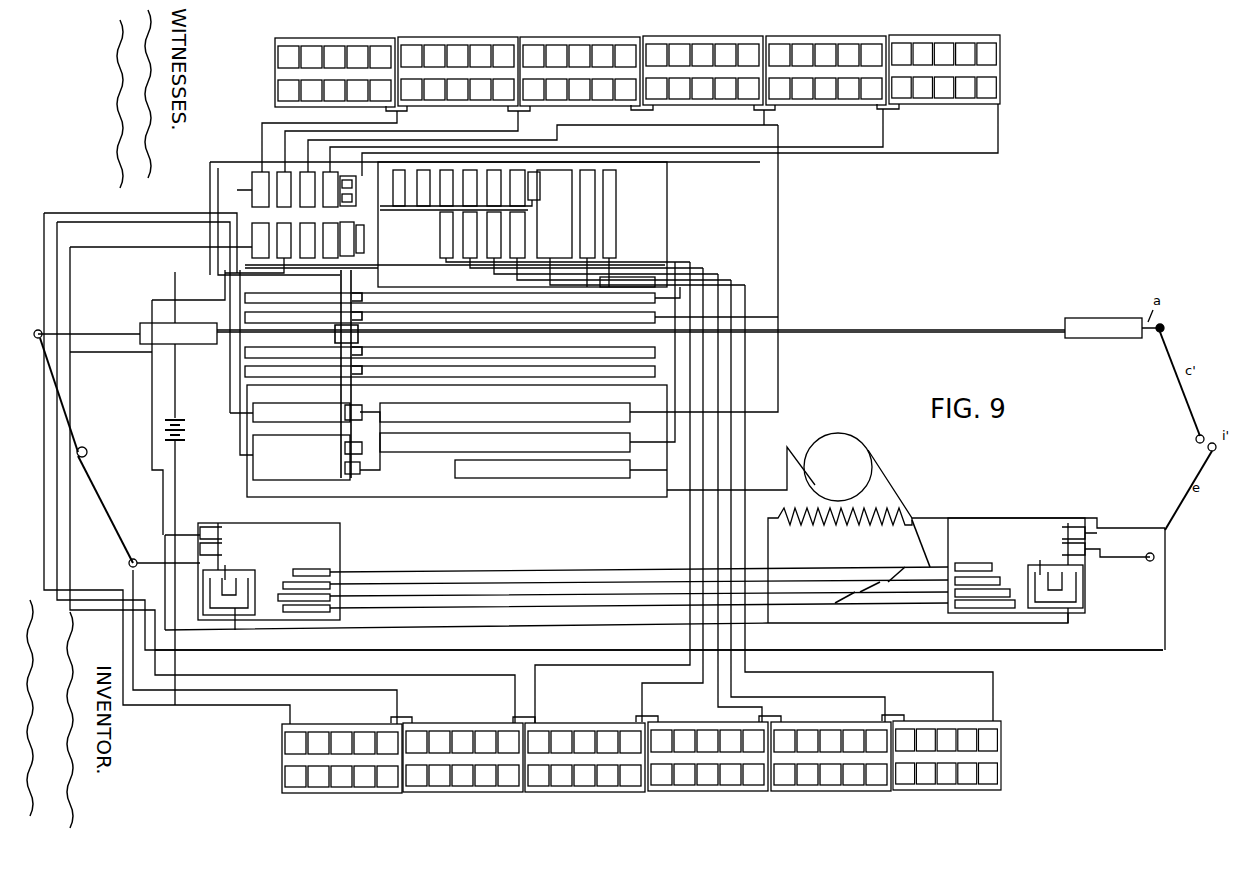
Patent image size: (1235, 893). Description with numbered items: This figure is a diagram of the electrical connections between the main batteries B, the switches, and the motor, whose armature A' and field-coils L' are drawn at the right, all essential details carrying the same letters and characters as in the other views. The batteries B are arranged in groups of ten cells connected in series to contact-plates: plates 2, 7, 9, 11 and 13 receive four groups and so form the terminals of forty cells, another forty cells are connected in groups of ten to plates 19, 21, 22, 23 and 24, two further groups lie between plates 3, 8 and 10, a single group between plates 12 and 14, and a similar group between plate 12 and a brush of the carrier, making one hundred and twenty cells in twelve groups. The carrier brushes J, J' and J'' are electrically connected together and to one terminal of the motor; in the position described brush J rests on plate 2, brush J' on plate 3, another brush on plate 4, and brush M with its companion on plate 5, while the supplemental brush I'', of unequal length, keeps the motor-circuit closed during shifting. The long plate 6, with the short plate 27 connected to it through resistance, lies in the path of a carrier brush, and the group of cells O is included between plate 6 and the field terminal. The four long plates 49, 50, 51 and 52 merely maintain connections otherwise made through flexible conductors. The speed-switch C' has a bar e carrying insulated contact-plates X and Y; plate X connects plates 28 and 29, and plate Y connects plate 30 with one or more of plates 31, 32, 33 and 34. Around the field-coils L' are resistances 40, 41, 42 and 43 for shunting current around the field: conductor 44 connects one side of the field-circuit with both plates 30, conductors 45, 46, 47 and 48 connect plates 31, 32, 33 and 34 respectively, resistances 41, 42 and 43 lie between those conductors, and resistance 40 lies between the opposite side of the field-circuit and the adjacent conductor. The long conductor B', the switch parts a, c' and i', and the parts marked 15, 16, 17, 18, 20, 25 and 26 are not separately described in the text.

The storage battery B is at (638, 412).
The main conductor B' is at (641, 318).
The armature / motor A' is at (838, 467).
The field-coils L' is at (840, 565).
The controller C' is at (641, 569).
The contact-plate X is at (648, 546).
The contact-plate Y is at (651, 587).
The group of cells O is at (186, 430).
The resistance box a is at (130, 331).
The lever arm c' is at (66, 391).
The pivot i' is at (89, 455).
The bar e is at (100, 499).
The brush M is at (362, 441).
The brush J is at (351, 200).
The brush J' is at (360, 239).
The brush J'' is at (545, 186).
The supplemental brush I'' is at (354, 184).
The contact-plate 2 is at (260, 189).
The contact-plate 3 is at (260, 240).
The plate 4 is at (290, 362).
The plate 5 is at (301, 457).
The plate 6 is at (455, 269).
The contact-plate 7 is at (284, 189).
The contact-plate 8 is at (284, 240).
The contact-plate 9 is at (307, 189).
The contact-plate 10 is at (307, 240).
The contact-plate 11 is at (328, 208).
The contact-plate 12 is at (330, 240).
The contact-plate 13 is at (361, 191).
The contact-plate 14 is at (364, 228).
The relay 15 is at (399, 188).
The contact bar 16 is at (579, 273).
The contact bar 17 is at (527, 357).
The relay 18 is at (423, 188).
The contact-plate 19 is at (446, 214).
The contact bar 20 is at (561, 469).
The contact-plate 21 is at (470, 214).
The contact-plate 22 is at (494, 214).
The contact-plate 23 is at (517, 214).
The contact-plate 24 is at (554, 214).
The relay 25 is at (587, 214).
The relay 26 is at (616, 208).
The plate 27 is at (630, 282).
The plate 28 is at (208, 530).
The plate 29 is at (1098, 549).
The plate 30 is at (648, 610).
The plate 31 is at (320, 612).
The plate 32 is at (642, 596).
The plate 33 is at (642, 584).
The plate 34 is at (642, 562).
The resistance 40 is at (924, 543).
The resistance 41 is at (902, 574).
The resistance 42 is at (874, 585).
The resistance 43 is at (848, 599).
The conductor 44 is at (616, 586).
The conductor 45 is at (528, 609).
The conductor 46 is at (515, 590).
The conductor 47 is at (560, 580).
The conductor 48 is at (639, 579).
The long plate 49 is at (462, 295).
The long plate 50 is at (511, 315).
The long plate 51 is at (450, 350).
The long plate 52 is at (450, 369).